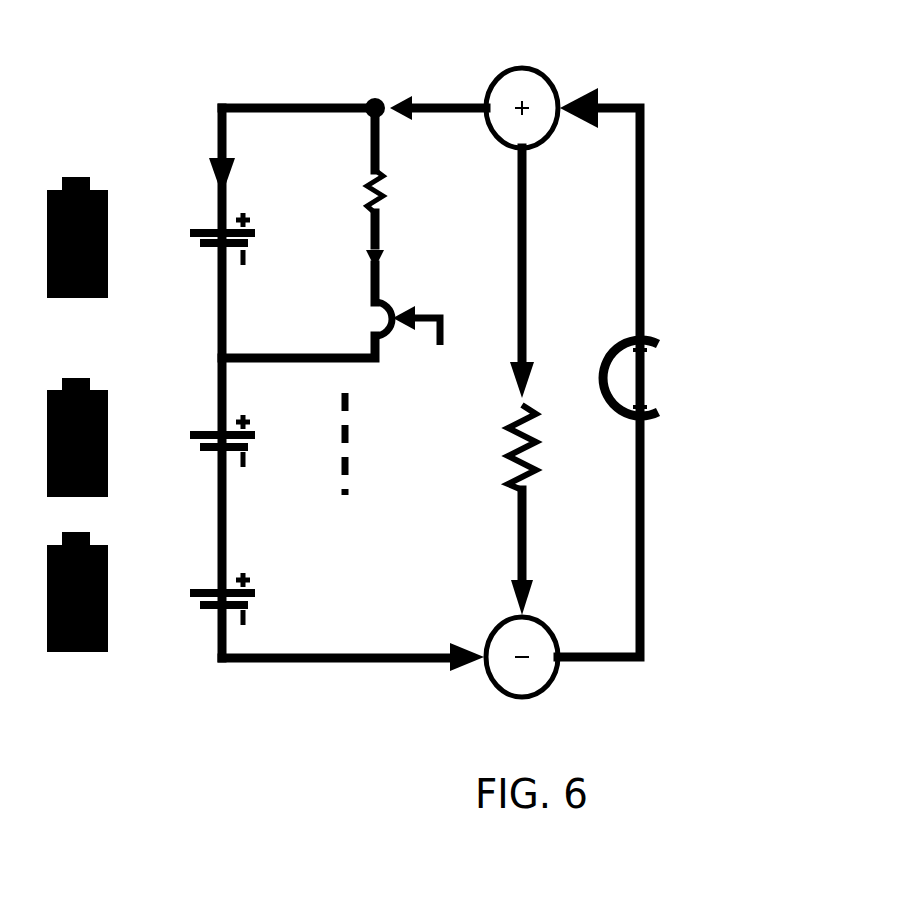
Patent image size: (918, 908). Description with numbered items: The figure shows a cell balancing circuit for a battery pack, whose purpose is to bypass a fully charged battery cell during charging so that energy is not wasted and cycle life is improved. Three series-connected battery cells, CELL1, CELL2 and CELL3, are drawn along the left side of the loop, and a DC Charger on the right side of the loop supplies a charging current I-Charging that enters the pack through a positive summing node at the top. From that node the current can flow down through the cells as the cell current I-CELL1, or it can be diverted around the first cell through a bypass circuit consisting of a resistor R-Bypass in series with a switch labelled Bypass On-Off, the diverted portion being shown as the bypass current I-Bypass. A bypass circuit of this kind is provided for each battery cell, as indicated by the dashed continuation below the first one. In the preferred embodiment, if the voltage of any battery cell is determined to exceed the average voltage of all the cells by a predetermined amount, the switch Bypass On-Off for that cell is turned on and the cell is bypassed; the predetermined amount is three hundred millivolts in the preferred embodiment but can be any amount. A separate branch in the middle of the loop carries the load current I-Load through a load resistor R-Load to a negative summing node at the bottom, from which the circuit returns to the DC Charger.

The battery cell CELL1 is at (151, 237).
The battery cell CELL2 is at (151, 437).
The battery cell CELL3 is at (151, 592).
The cell current I-CELL1 is at (225, 159).
The charging current I-Charging is at (443, 95).
The bypass resistor R-Bypass is at (415, 191).
The bypass current I-Bypass is at (376, 249).
The bypass switch Bypass On-Off is at (407, 398).
The load current I-Load is at (529, 330).
The load resistor R-Load is at (492, 510).
The DC charger DC Charger is at (680, 378).